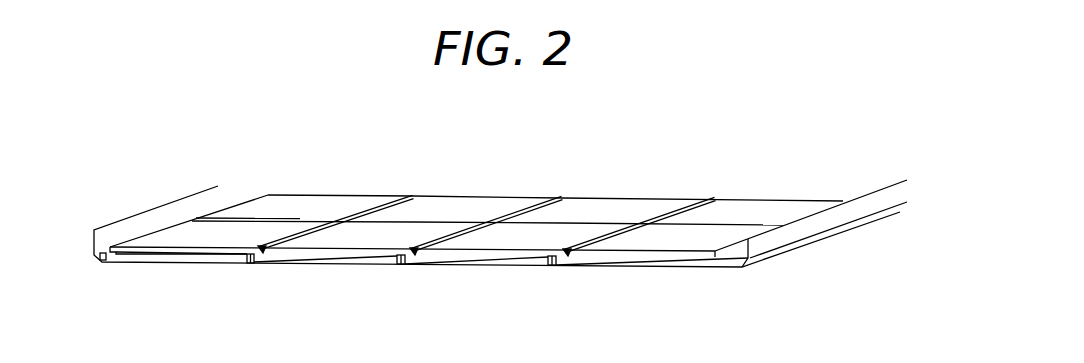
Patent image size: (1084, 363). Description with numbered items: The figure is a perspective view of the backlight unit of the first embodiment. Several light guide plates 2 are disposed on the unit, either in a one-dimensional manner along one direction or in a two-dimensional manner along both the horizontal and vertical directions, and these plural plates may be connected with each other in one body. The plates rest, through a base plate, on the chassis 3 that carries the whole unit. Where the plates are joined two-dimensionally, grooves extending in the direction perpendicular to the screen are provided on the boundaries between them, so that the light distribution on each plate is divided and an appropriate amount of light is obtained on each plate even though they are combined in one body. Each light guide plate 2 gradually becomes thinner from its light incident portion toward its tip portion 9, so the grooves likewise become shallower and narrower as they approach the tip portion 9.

The light guide plate 2 is at (168, 262).
The chassis 3 is at (660, 268).
The tip portion 9 is at (514, 210).